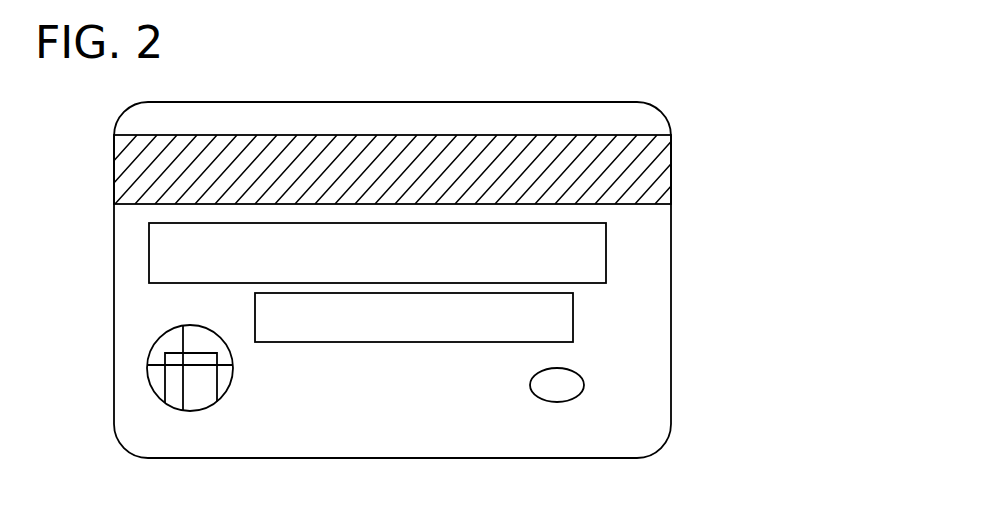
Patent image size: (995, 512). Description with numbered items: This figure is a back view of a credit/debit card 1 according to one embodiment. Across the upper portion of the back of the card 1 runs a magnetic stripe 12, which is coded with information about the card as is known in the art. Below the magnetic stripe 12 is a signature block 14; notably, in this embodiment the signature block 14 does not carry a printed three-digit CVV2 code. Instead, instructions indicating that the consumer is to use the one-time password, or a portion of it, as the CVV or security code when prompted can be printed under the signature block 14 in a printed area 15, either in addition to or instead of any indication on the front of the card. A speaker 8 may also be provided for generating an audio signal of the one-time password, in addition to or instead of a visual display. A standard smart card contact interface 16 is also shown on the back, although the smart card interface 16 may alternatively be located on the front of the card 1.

The card 1 is at (525, 102).
The magnetic stripe 12 is at (632, 168).
The signature block 14 is at (606, 267).
The printed area 15 is at (573, 307).
The smart card contact interface 16 is at (175, 409).
The speaker 8 is at (582, 393).